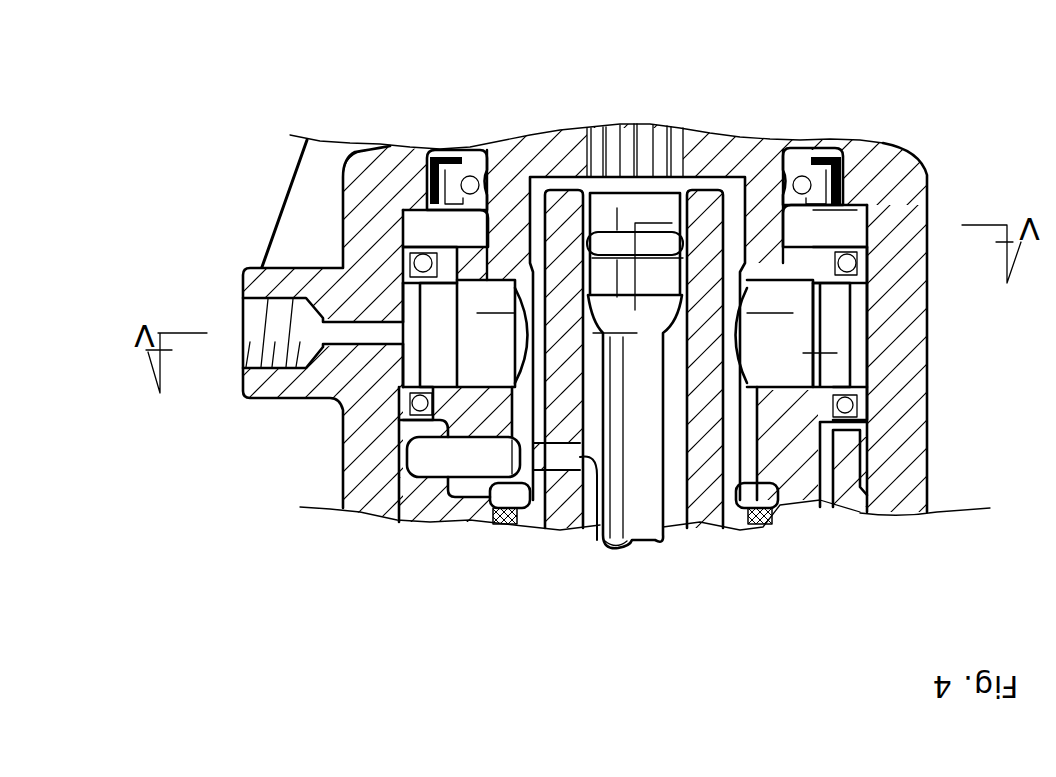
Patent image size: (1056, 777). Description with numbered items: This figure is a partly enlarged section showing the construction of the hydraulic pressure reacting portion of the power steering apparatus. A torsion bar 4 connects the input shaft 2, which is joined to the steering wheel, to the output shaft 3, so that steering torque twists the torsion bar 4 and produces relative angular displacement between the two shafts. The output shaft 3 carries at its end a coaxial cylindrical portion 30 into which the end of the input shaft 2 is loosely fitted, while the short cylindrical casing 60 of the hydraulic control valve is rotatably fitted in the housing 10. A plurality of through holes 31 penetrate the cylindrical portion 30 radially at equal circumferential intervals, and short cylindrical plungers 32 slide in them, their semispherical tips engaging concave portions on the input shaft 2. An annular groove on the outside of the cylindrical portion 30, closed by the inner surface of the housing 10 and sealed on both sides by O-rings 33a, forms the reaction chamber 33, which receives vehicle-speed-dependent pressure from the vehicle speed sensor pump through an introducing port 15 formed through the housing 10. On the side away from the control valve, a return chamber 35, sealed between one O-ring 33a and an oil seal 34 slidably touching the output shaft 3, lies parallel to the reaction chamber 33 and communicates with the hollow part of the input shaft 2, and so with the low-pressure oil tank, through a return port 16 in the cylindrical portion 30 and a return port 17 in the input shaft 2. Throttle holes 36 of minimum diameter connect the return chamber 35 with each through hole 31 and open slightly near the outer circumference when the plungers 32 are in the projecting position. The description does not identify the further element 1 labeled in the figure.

The motor unit 1 is at (372, 298).
The input shaft 2 is at (560, 528).
The output shaft 3 is at (518, 133).
The torsion bar 4 is at (649, 540).
The housing 10 is at (360, 510).
The introducing port 15 is at (243, 350).
The return port 16 is at (500, 245).
The return port 17 is at (590, 537).
The cylindrical portion 30 is at (863, 473).
The through holes 31 is at (340, 473).
The plungers 32 is at (340, 422).
The reaction chamber 33 is at (378, 292).
The O-rings 33a is at (813, 232).
The oil seal 34 is at (815, 148).
The return chamber 35 is at (458, 208).
The throttle holes 36 is at (400, 290).
The casing 60 is at (444, 525).